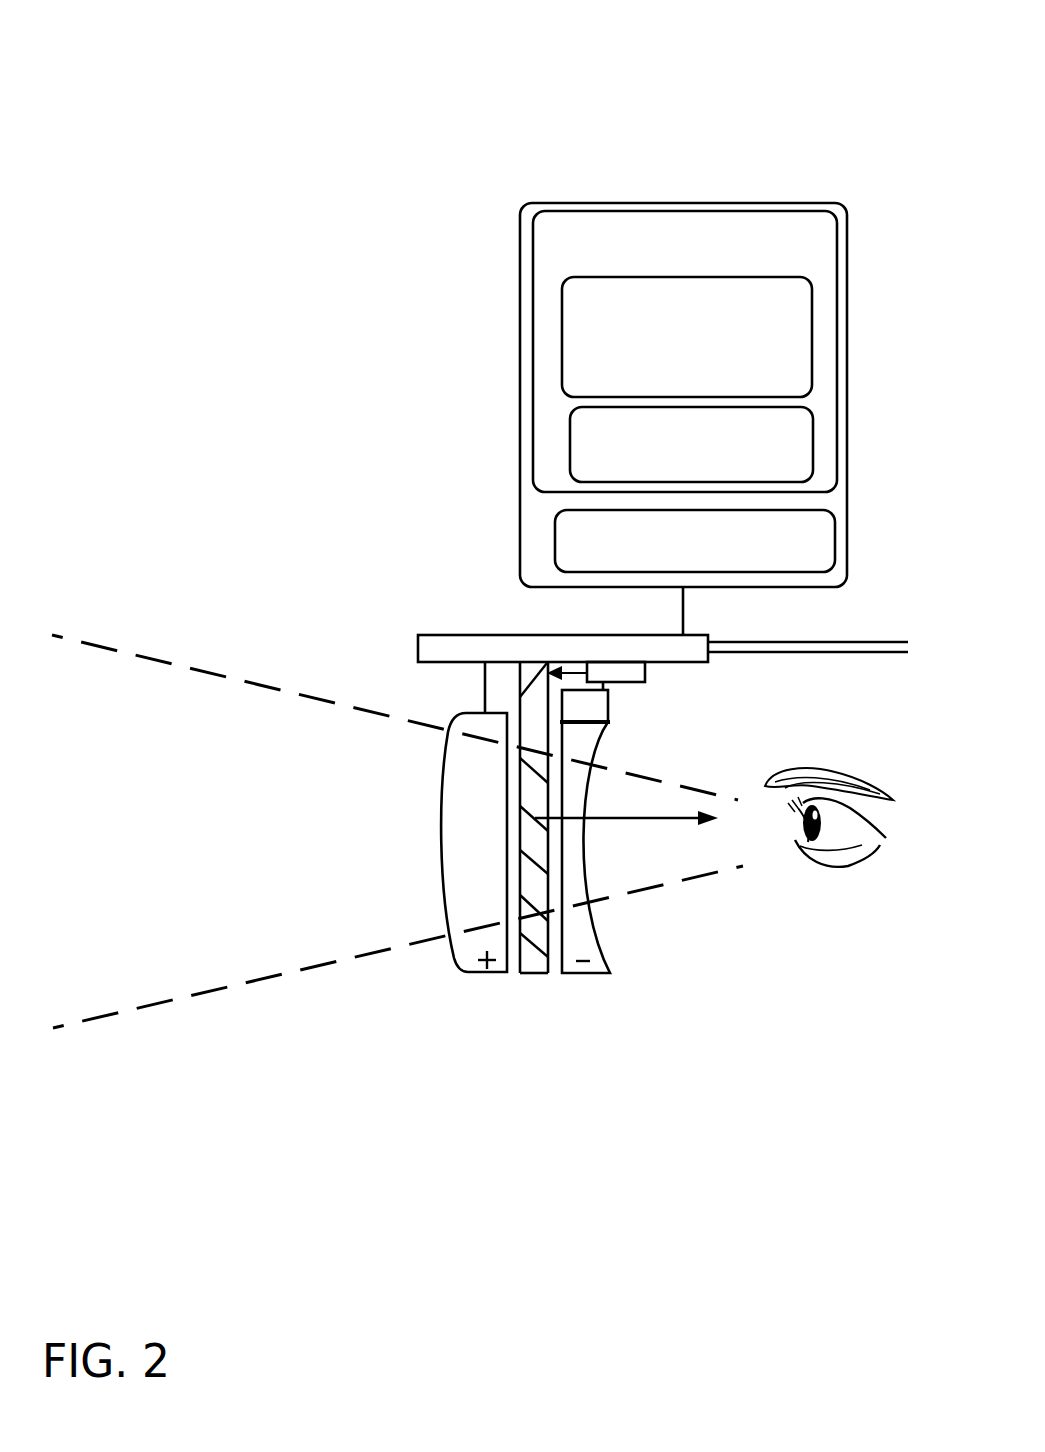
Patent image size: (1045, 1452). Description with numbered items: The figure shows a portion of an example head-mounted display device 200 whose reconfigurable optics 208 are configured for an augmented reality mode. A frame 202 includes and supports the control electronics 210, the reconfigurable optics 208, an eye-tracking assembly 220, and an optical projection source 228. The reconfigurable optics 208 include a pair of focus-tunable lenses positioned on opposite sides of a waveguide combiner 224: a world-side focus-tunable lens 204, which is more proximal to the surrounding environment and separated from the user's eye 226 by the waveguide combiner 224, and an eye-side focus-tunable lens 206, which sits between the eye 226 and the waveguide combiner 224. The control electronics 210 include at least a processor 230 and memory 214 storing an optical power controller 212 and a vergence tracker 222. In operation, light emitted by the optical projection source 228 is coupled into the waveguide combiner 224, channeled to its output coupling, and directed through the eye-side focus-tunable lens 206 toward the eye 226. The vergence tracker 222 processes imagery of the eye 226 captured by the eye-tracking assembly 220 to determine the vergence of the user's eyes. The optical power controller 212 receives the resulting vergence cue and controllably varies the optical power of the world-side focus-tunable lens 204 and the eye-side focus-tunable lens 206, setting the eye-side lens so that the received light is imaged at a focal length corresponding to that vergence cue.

The HMD device 200 is at (121, 62).
The frame 202 is at (843, 652).
The world-side focus-tunable lens 204 is at (480, 973).
The eye-side focus-tunable lens 206 is at (585, 973).
The reconfigurable optics 208 is at (660, 928).
The control electronics 210 is at (723, 203).
The optical power controller 212 is at (707, 375).
The memory 214 is at (674, 243).
The eye-tracking assembly 220 is at (608, 710).
The vergence tracker 222 is at (712, 470).
The waveguide combiner 224 is at (530, 973).
The eye 226 is at (817, 872).
The optical projection source 228 is at (645, 672).
The processor 230 is at (773, 554).